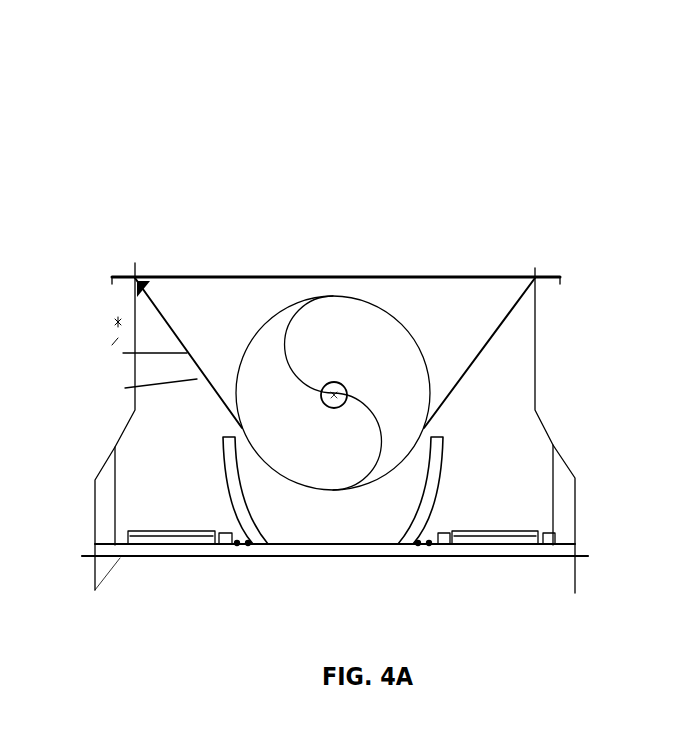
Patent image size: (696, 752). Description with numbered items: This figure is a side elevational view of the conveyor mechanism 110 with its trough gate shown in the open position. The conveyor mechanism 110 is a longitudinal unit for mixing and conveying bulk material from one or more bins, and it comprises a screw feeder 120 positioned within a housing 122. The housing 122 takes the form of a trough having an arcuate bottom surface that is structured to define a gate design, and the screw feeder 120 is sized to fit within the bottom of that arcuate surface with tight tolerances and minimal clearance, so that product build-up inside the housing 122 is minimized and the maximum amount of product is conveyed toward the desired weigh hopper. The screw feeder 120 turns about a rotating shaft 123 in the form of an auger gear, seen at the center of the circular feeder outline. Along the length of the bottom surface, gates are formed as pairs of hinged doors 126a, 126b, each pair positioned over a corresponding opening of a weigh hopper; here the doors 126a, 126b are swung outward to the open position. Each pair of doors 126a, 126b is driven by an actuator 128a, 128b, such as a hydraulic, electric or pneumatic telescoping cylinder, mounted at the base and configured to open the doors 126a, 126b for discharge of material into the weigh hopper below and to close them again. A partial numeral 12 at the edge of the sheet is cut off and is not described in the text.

The conveyor mechanism 110 is at (540, 224).
The screw feeder 120 is at (398, 318).
The housing 122 is at (335, 353).
The rotating shaft 123 is at (335, 382).
The hinged door 126a is at (433, 482).
The hinged door 126b is at (223, 490).
The actuator 128a is at (478, 557).
The actuator 128b is at (180, 558).
The component (numeral cut off at sheet edge) 12 is at (685, 446).